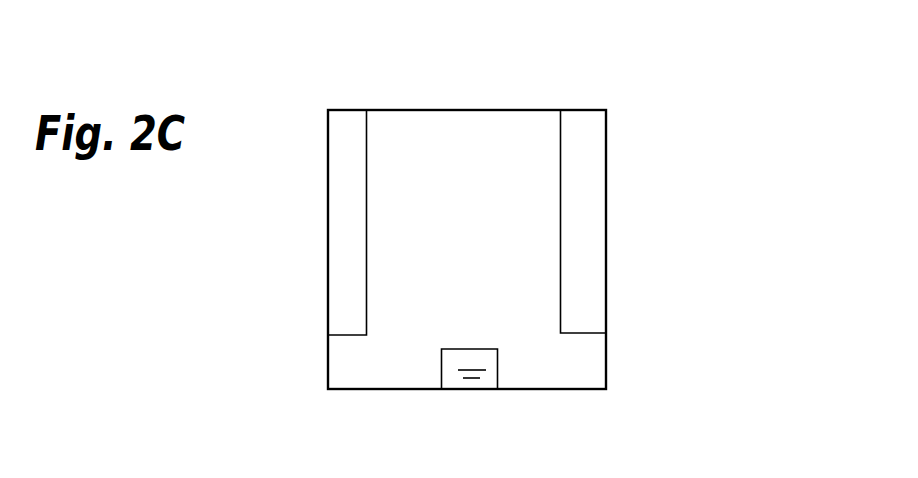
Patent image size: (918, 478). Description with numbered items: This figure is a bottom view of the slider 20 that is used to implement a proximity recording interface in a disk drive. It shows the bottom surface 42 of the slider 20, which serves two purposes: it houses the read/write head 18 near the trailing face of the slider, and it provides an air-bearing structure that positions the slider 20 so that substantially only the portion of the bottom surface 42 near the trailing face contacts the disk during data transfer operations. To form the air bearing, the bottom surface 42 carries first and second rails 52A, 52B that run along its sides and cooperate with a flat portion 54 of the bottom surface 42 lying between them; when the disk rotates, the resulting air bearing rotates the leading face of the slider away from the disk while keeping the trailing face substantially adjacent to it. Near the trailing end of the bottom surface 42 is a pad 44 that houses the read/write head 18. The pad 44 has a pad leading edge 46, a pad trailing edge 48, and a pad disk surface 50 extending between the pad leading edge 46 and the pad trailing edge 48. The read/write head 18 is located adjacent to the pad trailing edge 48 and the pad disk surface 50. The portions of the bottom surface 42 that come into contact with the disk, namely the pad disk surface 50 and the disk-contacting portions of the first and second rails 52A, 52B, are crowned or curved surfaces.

The slider 20 is at (685, 163).
The bottom surface 42 is at (508, 92).
The flat portion 54 is at (418, 127).
The first rail 52A is at (328, 225).
The second rail 52B is at (606, 260).
The pad 44 is at (522, 368).
The pad leading edge 46 is at (463, 349).
The pad disk surface 50 is at (455, 365).
The pad trailing edge 48 is at (456, 389).
The read/write head 18 is at (472, 382).